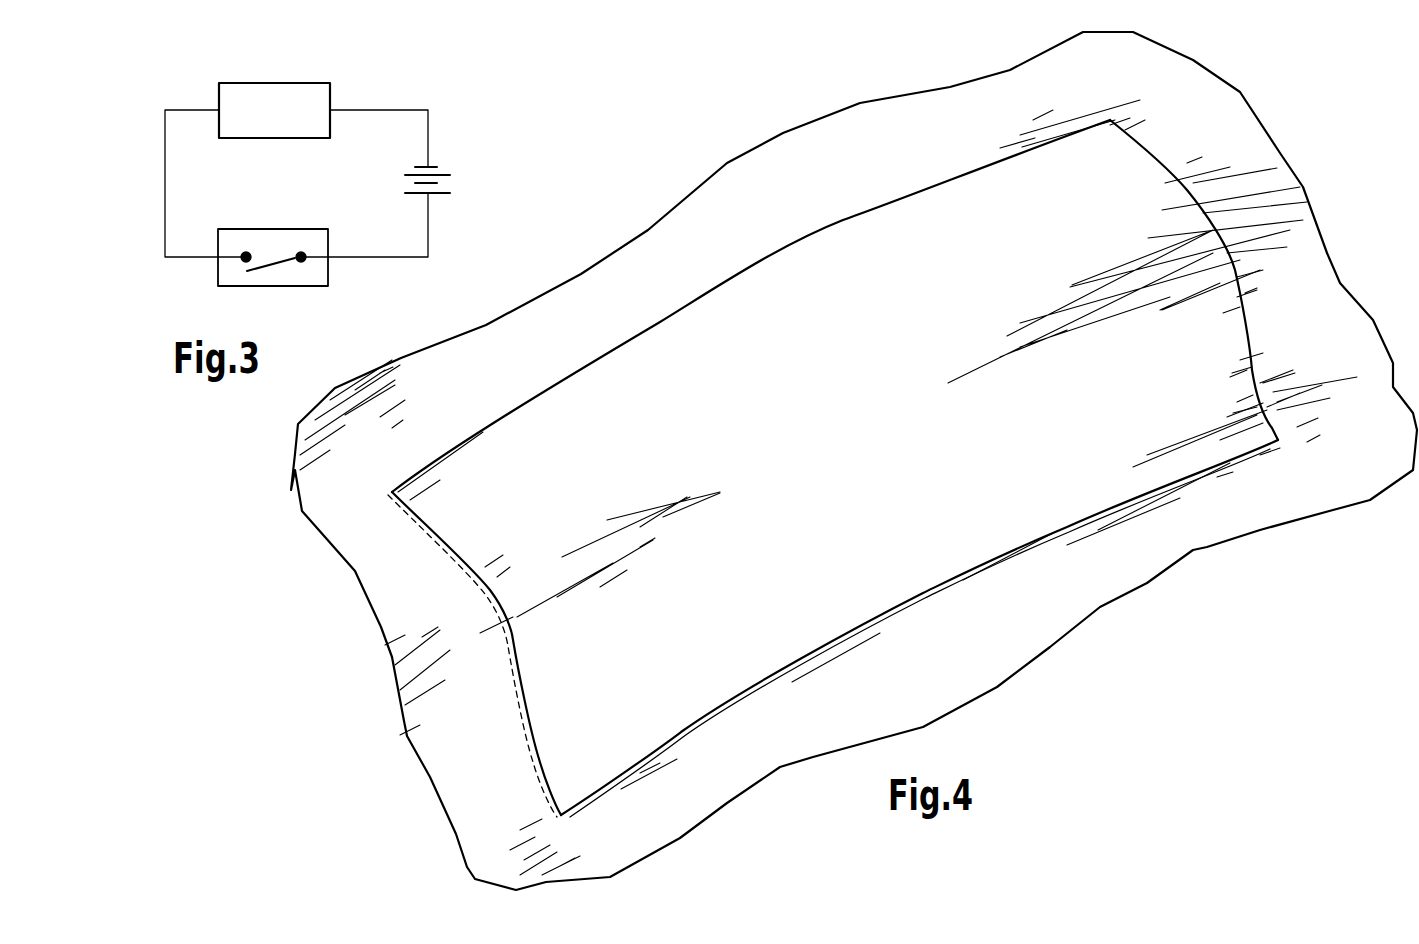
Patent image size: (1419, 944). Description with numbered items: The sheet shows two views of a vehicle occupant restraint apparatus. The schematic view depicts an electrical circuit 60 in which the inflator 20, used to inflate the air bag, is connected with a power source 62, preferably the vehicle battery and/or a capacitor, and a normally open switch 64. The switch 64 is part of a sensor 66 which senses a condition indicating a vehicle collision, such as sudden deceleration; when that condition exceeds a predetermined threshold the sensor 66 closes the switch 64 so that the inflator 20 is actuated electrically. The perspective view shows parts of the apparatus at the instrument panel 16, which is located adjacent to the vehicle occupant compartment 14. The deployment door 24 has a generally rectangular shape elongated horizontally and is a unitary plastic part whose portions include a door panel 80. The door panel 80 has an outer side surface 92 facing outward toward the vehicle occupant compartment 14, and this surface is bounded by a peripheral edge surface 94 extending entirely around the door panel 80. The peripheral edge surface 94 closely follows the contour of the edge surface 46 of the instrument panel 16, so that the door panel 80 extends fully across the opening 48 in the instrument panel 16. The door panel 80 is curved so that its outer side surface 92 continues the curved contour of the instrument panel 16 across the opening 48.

In FIG. 4, the vehicle occupant compartment 14 is at (1389, 238).
In FIG. 4, the instrument panel 16 is at (1187, 70).
In FIG. 3, the inflator 20 is at (282, 83).
In FIG. 4, the deployment door 24 is at (932, 257).
In FIG. 4, the edge surface 46 is at (1230, 247).
In FIG. 4, the opening 48 is at (1152, 153).
In FIG. 3, the electrical circuit 60 is at (160, 83).
In FIG. 3, the power source 62 is at (443, 173).
In FIG. 3, the switch 64 is at (260, 270).
In FIG. 3, the sensor 66 is at (310, 287).
In FIG. 4, the door panel 80 is at (517, 585).
In FIG. 4, the outer side surface 92 is at (880, 535).
In FIG. 4, the peripheral edge surface 94 is at (535, 762).